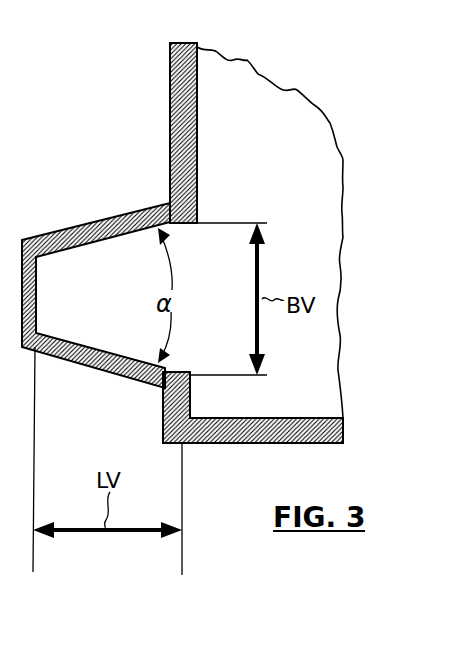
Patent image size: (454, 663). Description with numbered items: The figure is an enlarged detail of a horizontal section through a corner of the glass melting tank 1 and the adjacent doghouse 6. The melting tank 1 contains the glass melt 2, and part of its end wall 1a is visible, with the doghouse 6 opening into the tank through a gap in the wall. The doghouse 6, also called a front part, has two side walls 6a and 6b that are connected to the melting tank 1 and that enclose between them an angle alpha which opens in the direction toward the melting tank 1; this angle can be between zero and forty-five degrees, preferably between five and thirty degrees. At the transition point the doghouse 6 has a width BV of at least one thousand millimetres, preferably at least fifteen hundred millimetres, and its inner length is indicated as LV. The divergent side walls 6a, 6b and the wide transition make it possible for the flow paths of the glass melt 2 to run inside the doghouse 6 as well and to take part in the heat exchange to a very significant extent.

The glass melting tank 1 is at (200, 91).
The end wall 1a is at (346, 433).
The glass melt 2 is at (285, 192).
The doghouse 6 is at (89, 222).
The side wall 6a is at (68, 337).
The side wall 6b is at (61, 257).